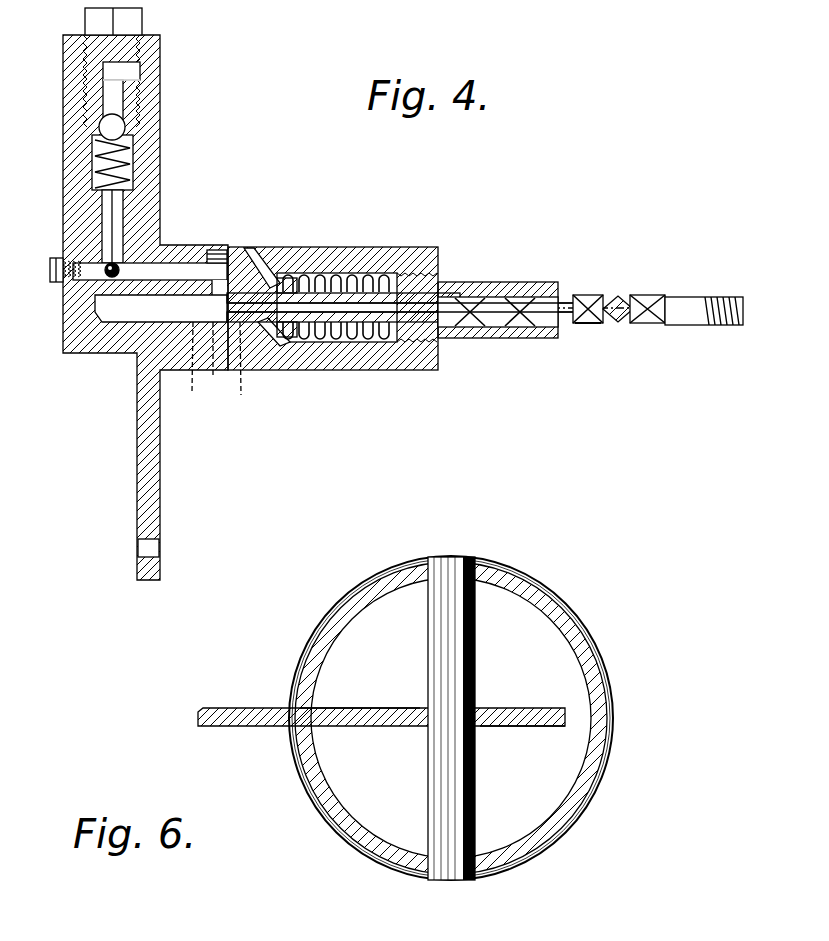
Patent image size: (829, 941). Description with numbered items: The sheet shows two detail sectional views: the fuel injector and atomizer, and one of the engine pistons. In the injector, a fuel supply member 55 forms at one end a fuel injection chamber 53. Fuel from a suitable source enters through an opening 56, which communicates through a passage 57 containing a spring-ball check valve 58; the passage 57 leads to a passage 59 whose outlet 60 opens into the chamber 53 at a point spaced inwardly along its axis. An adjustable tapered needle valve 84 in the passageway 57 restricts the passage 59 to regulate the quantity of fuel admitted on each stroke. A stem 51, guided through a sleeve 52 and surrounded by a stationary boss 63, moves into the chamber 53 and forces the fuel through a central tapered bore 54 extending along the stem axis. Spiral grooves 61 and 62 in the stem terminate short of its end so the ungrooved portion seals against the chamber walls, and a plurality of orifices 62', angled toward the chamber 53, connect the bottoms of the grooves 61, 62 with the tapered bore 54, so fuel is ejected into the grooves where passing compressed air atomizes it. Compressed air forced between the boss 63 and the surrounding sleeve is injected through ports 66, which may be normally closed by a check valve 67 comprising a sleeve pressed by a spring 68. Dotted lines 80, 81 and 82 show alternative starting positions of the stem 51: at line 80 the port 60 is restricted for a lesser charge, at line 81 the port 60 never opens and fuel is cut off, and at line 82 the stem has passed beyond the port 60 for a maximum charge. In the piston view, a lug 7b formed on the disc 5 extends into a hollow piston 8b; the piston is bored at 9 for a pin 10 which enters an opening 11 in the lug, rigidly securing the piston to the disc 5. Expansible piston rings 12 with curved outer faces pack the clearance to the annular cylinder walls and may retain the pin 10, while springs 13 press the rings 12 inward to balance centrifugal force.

In FIG. 6, the disc 5 is at (216, 712).
In FIG. 6, the lug 7b is at (363, 712).
In FIG. 6, the piston 8b is at (567, 619).
In FIG. 6, the bore 9 is at (490, 564).
In FIG. 6, the pin 10 is at (476, 642).
In FIG. 6, the opening 11 is at (486, 727).
In FIG. 6, the piston rings 12 is at (609, 680).
In FIG. 6, the springs 13 is at (338, 612).
In FIG. 4, the stem 51 is at (586, 295).
In FIG. 4, the sleeve 52 is at (470, 283).
In FIG. 4, the fuel injection chamber 53 is at (118, 315).
In FIG. 4, the tapered bore 54 is at (620, 300).
In FIG. 4, the fuel supply member 55 is at (160, 197).
In FIG. 4, the opening 56 is at (152, 75).
In FIG. 4, the passage 57 is at (110, 205).
In FIG. 4, the spring-ball check valve 58 is at (130, 136).
In FIG. 4, the passage 59 is at (173, 266).
In FIG. 4, the outlet 60 is at (200, 268).
In FIG. 4, the groove 61 is at (585, 323).
In FIG. 4, the groove 62 is at (647, 325).
In FIG. 4, the orifices 62' is at (702, 288).
In FIG. 4, the stationary boss 63 is at (432, 371).
In FIG. 4, the ports 66 is at (260, 266).
In FIG. 4, the check valve 67 is at (300, 272).
In FIG. 4, the spring 68 is at (345, 336).
In FIG. 4, the dotted line 80 is at (220, 358).
In FIG. 4, the dotted line 81 is at (187, 367).
In FIG. 4, the dotted line 82 is at (248, 369).
In FIG. 4, the adjustable tapered needle valve 84 is at (112, 262).